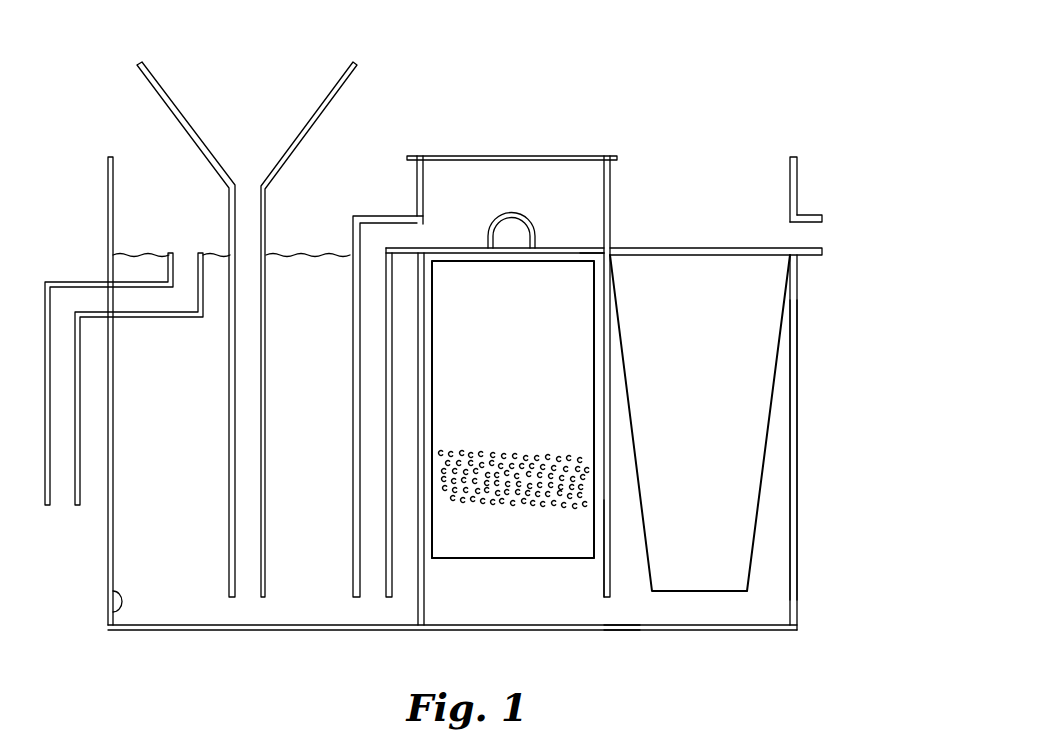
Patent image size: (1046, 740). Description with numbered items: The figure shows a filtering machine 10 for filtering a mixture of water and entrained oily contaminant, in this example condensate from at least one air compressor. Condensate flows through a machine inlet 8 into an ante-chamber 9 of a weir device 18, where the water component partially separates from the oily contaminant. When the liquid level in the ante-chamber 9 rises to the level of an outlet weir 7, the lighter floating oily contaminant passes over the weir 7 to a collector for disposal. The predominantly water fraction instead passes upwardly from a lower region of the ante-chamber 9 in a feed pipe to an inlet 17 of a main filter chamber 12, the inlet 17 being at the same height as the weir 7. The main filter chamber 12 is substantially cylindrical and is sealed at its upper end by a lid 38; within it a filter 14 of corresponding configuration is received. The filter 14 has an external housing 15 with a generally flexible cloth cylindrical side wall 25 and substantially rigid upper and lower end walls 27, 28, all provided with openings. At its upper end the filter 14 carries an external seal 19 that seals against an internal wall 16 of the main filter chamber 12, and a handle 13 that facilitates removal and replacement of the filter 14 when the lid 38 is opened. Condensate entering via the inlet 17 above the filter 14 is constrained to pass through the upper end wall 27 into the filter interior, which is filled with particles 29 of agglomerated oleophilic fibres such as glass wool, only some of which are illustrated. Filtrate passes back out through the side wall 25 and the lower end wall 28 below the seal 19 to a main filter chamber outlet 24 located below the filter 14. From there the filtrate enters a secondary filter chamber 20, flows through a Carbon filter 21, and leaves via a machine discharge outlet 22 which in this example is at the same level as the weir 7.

The filtering machine 10 is at (694, 150).
The weir device 18 is at (123, 193).
The machine inlet 8 is at (238, 132).
The outlet weir 7 is at (182, 270).
The ante-chamber 9 is at (110, 613).
The inlet 17 is at (386, 229).
The main filter chamber 12 is at (577, 178).
The lid 38 is at (521, 155).
The upper end wall 27 is at (454, 257).
The external seal 19 is at (597, 257).
The handle 13 is at (507, 217).
The filter 14 is at (567, 563).
The side wall 25 is at (563, 270).
The lower end wall 28 is at (504, 560).
The external housing 15 is at (461, 564).
The internal wall 16 is at (598, 514).
The main filter chamber outlet 24 is at (608, 607).
The particles 29 is at (560, 455).
The machine discharge outlet 22 is at (795, 237).
The secondary filter chamber 20 is at (805, 362).
The Carbon filter 21 is at (708, 488).